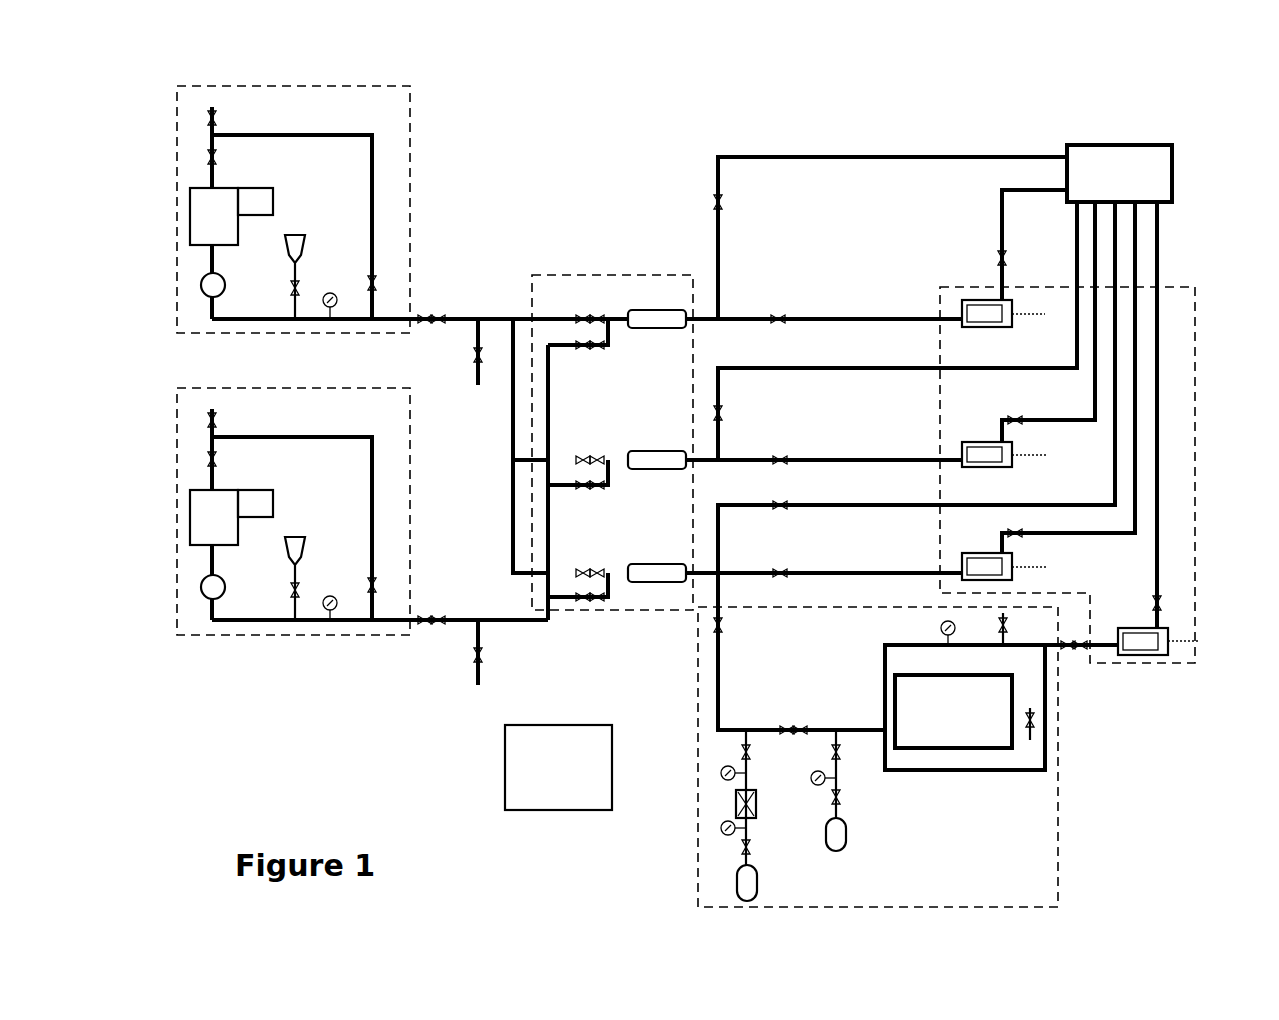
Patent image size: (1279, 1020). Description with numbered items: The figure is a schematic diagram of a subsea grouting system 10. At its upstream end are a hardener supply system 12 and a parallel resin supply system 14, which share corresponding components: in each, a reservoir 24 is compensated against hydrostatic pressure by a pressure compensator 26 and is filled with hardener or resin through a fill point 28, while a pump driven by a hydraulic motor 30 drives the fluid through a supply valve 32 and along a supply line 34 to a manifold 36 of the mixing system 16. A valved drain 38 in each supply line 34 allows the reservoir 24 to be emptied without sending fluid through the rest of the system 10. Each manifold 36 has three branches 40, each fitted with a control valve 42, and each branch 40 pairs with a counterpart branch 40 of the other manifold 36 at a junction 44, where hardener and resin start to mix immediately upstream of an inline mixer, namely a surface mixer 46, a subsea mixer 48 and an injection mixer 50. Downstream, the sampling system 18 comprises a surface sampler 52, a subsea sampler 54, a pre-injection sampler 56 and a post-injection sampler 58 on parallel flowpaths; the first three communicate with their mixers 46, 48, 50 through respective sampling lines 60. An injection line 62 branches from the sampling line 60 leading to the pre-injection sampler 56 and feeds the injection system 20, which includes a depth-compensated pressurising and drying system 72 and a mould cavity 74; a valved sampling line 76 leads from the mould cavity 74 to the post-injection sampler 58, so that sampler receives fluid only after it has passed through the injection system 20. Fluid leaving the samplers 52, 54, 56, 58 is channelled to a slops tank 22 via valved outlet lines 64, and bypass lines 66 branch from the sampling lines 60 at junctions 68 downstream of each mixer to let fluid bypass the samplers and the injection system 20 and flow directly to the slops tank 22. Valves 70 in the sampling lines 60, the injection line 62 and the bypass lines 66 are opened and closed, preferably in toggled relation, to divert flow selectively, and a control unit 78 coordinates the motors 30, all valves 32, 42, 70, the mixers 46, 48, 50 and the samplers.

The subsea grouting system 10 is at (240, 698).
The hardener supply system 12 is at (410, 172).
The resin supply system 14 is at (356, 638).
The mixing system 16 is at (574, 275).
The sampling system 18 is at (1197, 455).
The injection system 20 is at (697, 830).
The slops tank 22 is at (1146, 160).
The reservoir 24 is at (200, 200).
The pressure compensator 26 is at (264, 199).
The fill point 28 is at (297, 252).
The hydraulic motor 30 is at (204, 289).
The supply valve 32 is at (431, 325).
The supply line 34 is at (454, 318).
The manifold 36 is at (513, 441).
The valved drain 38 is at (476, 366).
The branch 40 is at (580, 315).
The control valve 42 is at (594, 313).
The junction 44 is at (611, 318).
The surface mixer 46 is at (662, 323).
The subsea mixer 48 is at (651, 463).
The injection mixer 50 is at (662, 581).
The surface sampler 52 is at (985, 310).
The subsea sampler 54 is at (990, 455).
The pre-injection sampler 56 is at (990, 570).
The post-injection sampler 58 is at (1139, 643).
The sampling line 60 is at (829, 318).
The injection line 62 is at (719, 706).
The valved outlet line 64 is at (1000, 206).
The bypass line 66 is at (795, 155).
The junction 68 is at (722, 318).
The valve 70 is at (716, 199).
The depth-compensated pressurising and drying system 72 is at (855, 868).
The mould cavity 74 is at (955, 731).
The valved sampling line 76 is at (885, 666).
The control unit 78 is at (525, 765).